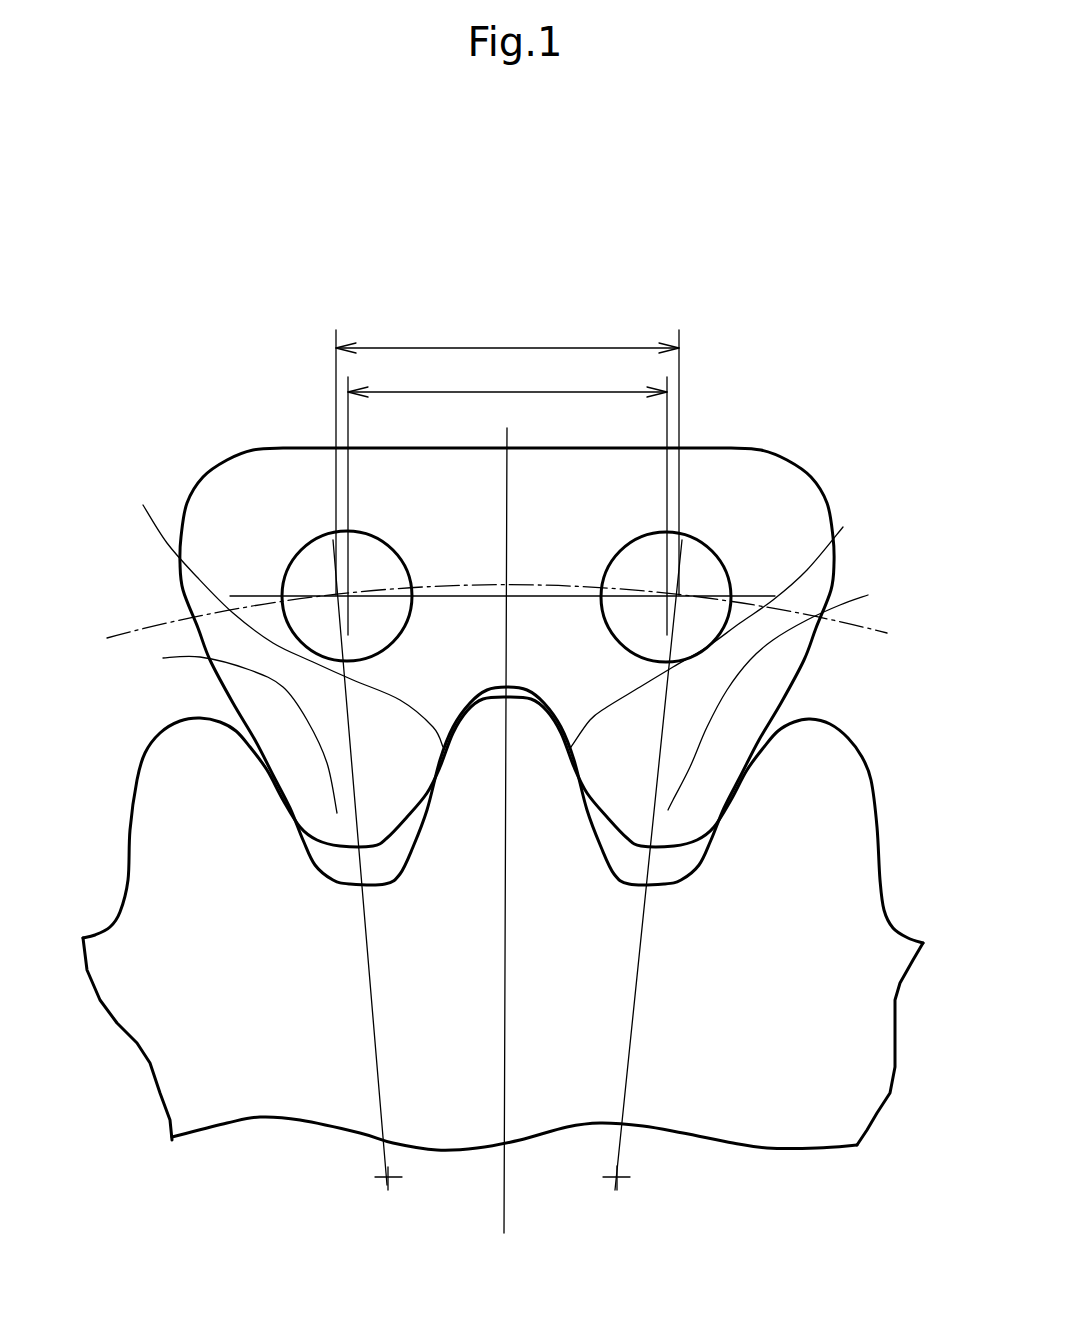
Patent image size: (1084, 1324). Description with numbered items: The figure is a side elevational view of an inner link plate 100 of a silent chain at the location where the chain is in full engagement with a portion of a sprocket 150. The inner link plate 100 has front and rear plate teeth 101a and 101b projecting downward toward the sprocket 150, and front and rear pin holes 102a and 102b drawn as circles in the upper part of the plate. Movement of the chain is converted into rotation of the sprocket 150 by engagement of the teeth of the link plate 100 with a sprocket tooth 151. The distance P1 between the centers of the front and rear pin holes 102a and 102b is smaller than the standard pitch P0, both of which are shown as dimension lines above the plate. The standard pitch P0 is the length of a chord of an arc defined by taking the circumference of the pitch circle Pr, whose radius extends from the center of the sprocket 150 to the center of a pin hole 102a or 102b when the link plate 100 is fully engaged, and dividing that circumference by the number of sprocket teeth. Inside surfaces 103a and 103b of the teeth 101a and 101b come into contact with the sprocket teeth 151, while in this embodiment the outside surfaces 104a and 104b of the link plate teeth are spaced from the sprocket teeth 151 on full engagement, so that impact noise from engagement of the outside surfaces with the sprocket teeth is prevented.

The inner link plate 100 is at (747, 377).
The front plate tooth 101a is at (217, 727).
The rear plate tooth 101b is at (803, 695).
The front pin hole 102a is at (313, 547).
The rear pin hole 102b is at (725, 563).
The inside surface 103a is at (272, 610).
The inside surface 103b is at (740, 623).
The outside surface 104a is at (262, 750).
The outside surface 104b is at (743, 760).
The sprocket 150 is at (288, 1047).
The sprocket tooth 151 is at (197, 743).
The pitch circle Pr is at (133, 623).
The standard pitch P0 is at (507, 459).
The distance between pin hole centers P1 is at (507, 501).